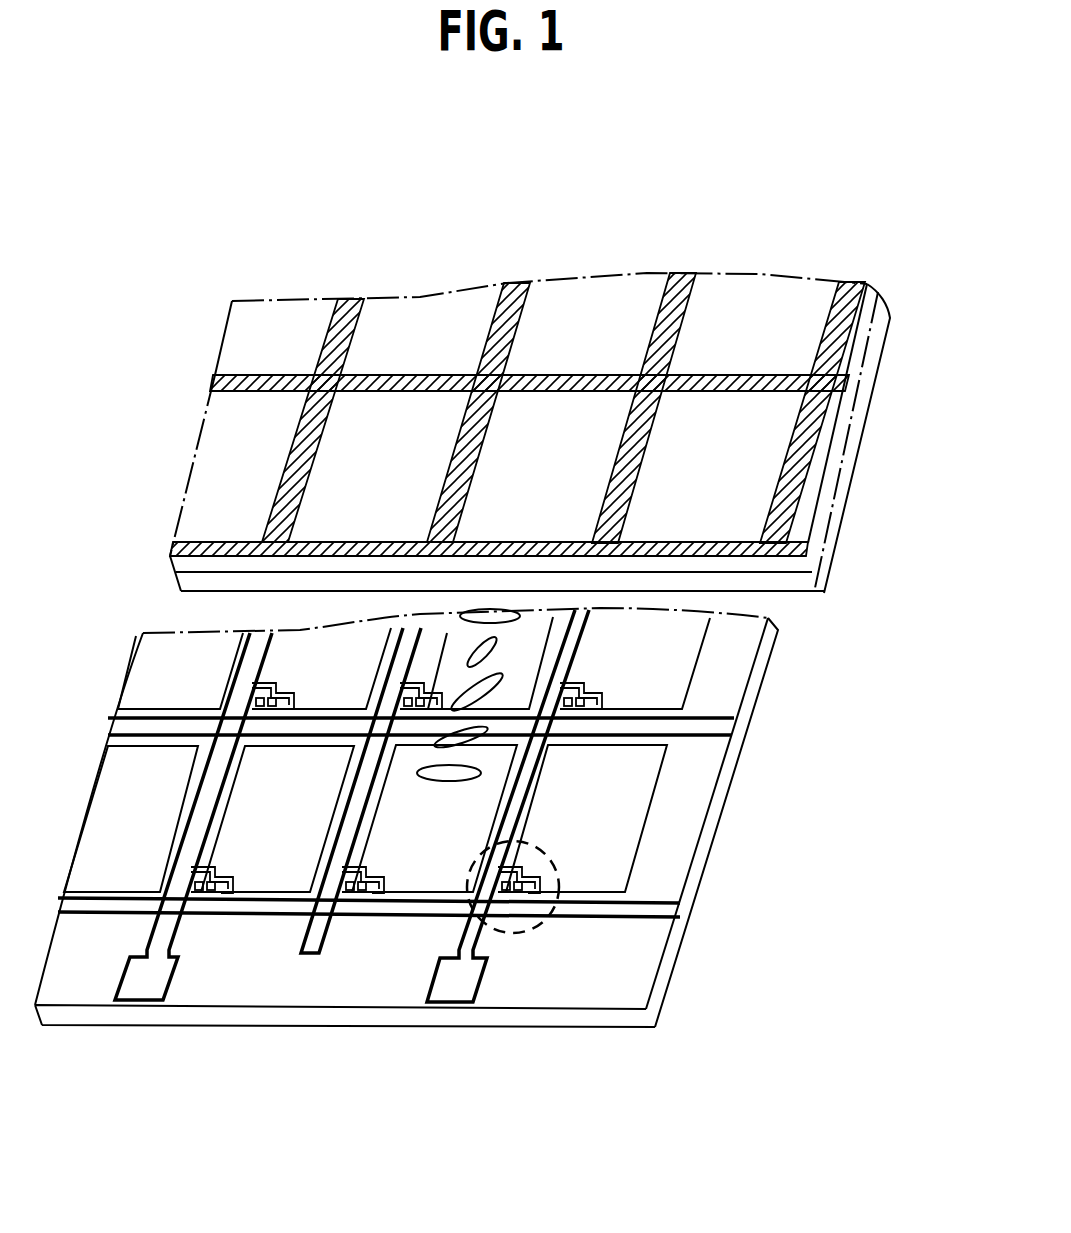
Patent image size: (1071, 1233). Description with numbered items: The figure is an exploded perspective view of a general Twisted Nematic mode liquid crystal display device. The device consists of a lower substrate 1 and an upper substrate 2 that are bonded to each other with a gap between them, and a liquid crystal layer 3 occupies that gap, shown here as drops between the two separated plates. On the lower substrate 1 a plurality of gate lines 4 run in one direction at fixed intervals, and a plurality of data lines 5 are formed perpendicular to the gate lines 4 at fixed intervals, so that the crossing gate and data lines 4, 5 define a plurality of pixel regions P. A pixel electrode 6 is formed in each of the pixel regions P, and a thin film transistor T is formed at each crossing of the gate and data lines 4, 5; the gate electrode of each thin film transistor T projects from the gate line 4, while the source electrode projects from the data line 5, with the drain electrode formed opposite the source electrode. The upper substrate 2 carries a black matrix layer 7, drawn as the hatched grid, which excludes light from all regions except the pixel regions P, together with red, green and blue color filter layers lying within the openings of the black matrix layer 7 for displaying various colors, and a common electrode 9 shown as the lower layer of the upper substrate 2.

The lower substrate 1 is at (620, 1017).
The upper substrate 2 is at (798, 565).
The liquid crystal layer 3 is at (490, 681).
The gate lines 4 is at (627, 904).
The data lines 5 is at (467, 940).
The pixel electrodes 6 is at (640, 837).
The black matrix layer 7 is at (845, 385).
The common electrode 9 is at (800, 585).
The pixel regions P is at (687, 783).
The thin film transistors T is at (512, 933).